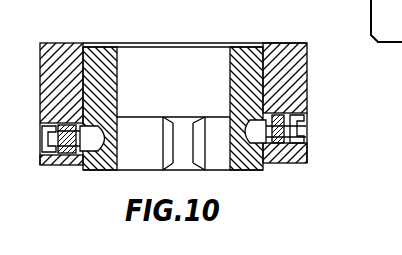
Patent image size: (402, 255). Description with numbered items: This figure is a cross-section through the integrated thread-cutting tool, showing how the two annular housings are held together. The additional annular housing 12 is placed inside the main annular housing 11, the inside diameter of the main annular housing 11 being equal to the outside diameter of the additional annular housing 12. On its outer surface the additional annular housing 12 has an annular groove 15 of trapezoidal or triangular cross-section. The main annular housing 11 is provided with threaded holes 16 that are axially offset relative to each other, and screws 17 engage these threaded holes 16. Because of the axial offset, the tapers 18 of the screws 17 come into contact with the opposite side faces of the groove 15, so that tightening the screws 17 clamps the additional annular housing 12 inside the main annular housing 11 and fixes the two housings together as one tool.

The main annular housing 11 is at (289, 48).
The additional annular housing 12 is at (250, 48).
The annular groove 15 is at (256, 166).
The threaded holes 16 is at (308, 133).
The screws 17 is at (298, 164).
The tapers 18 is at (277, 164).